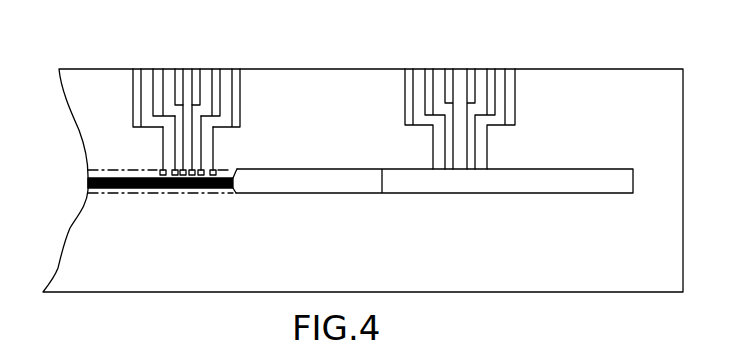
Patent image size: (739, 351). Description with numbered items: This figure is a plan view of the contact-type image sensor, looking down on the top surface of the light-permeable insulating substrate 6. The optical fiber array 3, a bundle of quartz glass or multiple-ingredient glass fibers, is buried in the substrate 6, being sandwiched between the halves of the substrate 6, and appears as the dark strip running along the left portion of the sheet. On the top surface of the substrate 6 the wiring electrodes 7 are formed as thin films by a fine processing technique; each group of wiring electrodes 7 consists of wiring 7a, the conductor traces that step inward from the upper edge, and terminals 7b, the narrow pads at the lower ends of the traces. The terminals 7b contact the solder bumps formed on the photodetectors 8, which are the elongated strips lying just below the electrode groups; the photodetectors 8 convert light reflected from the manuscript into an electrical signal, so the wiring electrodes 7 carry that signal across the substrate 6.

The optical fiber array 3 is at (86, 183).
The light-permeable insulating substrate 6 is at (627, 87).
The wiring electrodes 7 is at (314, 87).
The wiring 7a is at (136, 93).
The terminals 7b is at (156, 168).
The photodetectors 8 is at (353, 183).